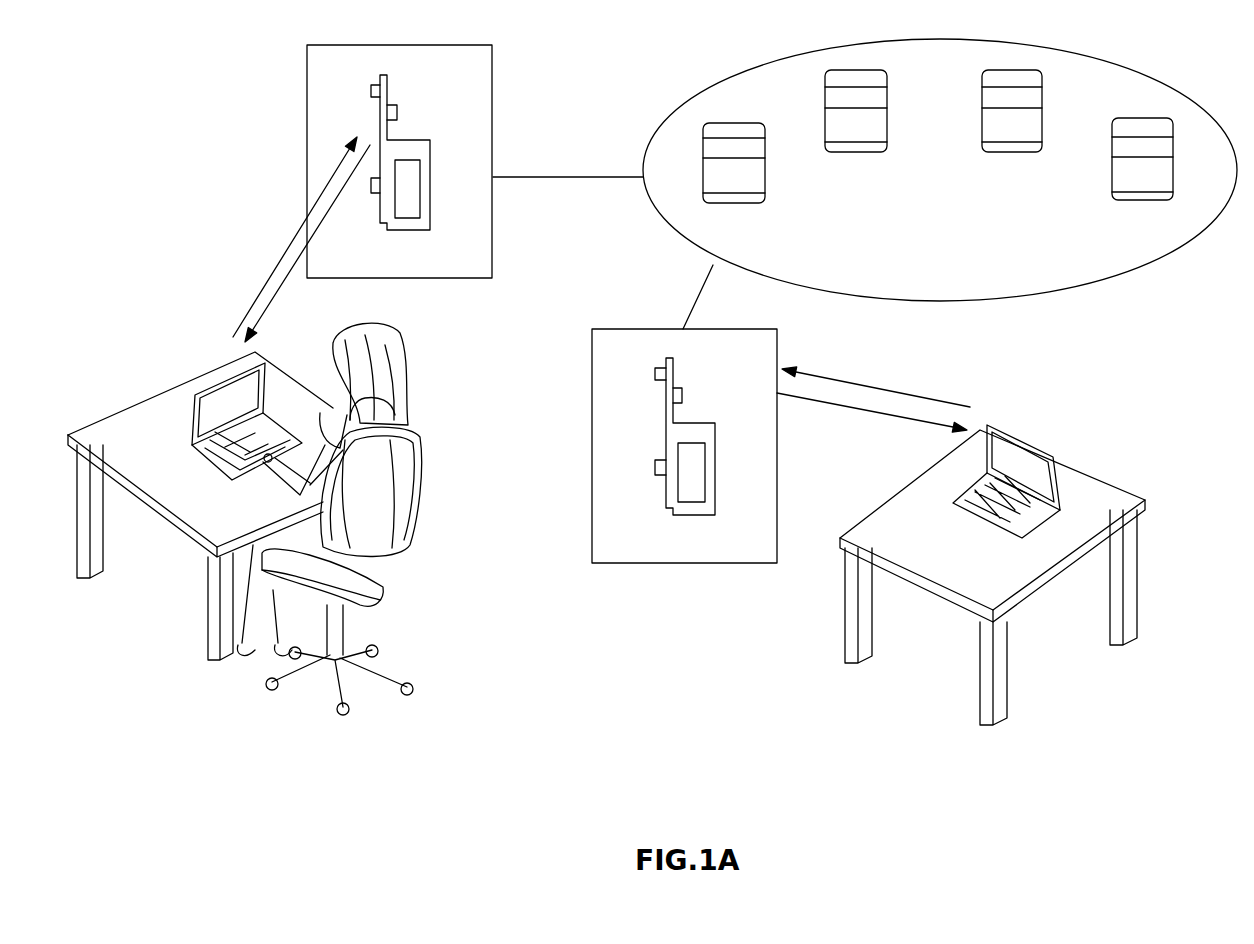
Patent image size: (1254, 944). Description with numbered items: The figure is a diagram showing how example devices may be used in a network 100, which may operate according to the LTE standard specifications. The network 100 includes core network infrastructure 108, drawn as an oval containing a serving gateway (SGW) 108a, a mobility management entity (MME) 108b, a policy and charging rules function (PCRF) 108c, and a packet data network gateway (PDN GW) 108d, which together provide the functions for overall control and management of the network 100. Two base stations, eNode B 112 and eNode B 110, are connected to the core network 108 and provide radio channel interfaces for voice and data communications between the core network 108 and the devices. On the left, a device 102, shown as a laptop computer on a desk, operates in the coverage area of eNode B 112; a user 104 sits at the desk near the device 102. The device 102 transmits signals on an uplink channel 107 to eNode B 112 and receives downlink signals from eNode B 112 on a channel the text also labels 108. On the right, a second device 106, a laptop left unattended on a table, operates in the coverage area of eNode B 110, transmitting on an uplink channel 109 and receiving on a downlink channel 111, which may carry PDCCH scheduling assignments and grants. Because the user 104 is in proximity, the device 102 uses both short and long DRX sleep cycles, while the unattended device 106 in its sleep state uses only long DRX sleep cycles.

The network 100 is at (668, 61).
The device 102 is at (210, 385).
The user 104 is at (400, 398).
The device 106 is at (1060, 455).
The uplink channel 107 is at (250, 310).
The core network infrastructure 108 is at (1152, 78).
The serving gateway (SGW) 108a is at (765, 195).
The mobility management entity (MME) 108b is at (825, 120).
The policy and charging rules function (PCRF) 108c is at (1042, 122).
The packet data network gateway (PDN GW) 108d is at (1112, 195).
The uplink channel 109 is at (863, 383).
The eNode B 110 is at (663, 490).
The downlink channel 111 is at (825, 405).
The eNode B 112 is at (430, 218).